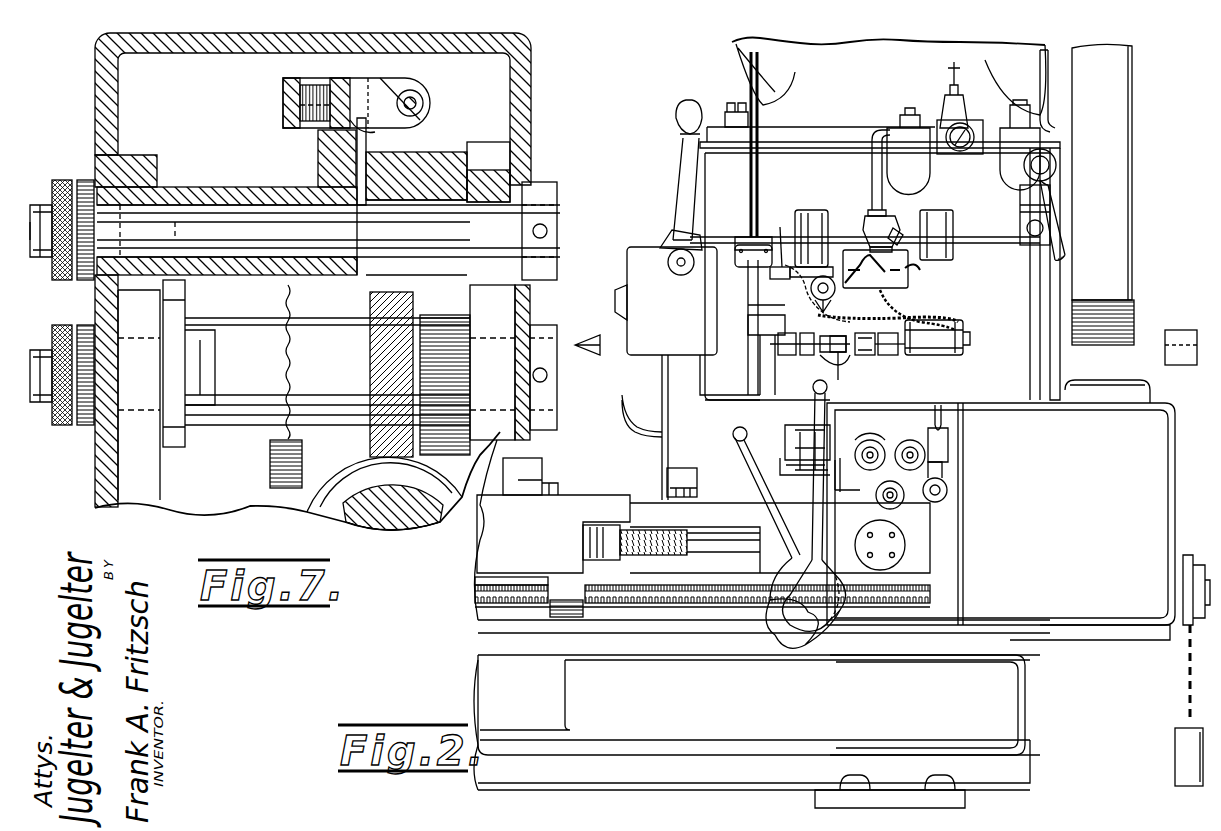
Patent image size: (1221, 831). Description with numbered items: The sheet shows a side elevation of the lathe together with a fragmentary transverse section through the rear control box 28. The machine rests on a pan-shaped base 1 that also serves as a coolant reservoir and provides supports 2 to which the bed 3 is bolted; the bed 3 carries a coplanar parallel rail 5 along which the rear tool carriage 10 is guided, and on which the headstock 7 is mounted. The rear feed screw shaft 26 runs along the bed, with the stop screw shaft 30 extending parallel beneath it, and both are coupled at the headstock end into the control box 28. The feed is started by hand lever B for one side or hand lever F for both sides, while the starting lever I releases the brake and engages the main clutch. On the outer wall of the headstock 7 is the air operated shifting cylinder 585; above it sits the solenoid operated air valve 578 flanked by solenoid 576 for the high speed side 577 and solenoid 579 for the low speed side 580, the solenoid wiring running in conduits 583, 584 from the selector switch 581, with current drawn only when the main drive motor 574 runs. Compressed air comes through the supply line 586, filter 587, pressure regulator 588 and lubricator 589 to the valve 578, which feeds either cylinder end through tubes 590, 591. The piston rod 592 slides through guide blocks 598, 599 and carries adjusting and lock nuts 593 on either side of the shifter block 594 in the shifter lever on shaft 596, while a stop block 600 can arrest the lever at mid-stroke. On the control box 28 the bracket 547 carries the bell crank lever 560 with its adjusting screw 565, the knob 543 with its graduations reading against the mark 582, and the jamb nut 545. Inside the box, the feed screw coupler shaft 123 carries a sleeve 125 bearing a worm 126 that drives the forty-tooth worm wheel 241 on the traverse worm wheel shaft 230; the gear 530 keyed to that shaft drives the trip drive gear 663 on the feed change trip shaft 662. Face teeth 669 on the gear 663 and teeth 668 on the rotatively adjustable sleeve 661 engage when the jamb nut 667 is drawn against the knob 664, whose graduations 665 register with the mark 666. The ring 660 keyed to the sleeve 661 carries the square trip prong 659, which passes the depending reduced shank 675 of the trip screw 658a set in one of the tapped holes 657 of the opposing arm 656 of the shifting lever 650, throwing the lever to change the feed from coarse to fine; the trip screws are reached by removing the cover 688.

In FIG. 7, the rear control box 28 is at (531, 132).
In FIG. 2, the rear control box 28 is at (1160, 452).
In FIG. 7, the splined portion of drive shaft / feed screw coupler shaft 123 is at (400, 528).
In FIG. 7, the sleeve 125 is at (355, 522).
In FIG. 7, the worm 126 is at (298, 512).
In FIG. 7, the jamb nut 667 is at (45, 203).
In FIG. 2, the jamb nut 667 is at (948, 468).
In FIG. 7, the knob 664 is at (62, 180).
In FIG. 2, the knob 664 is at (948, 445).
In FIG. 7, the circumferential graduations 665 is at (88, 180).
In FIG. 7, the rotatively adjustable sleeve 661 is at (195, 187).
In FIG. 7, the feed change trip shaft 662 is at (175, 213).
In FIG. 7, the ring 660 is at (318, 168).
In FIG. 7, the square trip prong 659 is at (318, 143).
In FIG. 7, the teeth on gear 669 is at (416, 176).
In FIG. 7, the teeth on sleeve 668 is at (372, 160).
In FIG. 7, the trip drive gear 663 is at (470, 168).
In FIG. 7, the shifting lever 650 is at (318, 78).
In FIG. 7, the opposing arm of shifter lever 656 is at (300, 90).
In FIG. 7, the tapped holes 657 is at (300, 120).
In FIG. 7, the trip screw 658a is at (405, 78).
In FIG. 7, the depending reduced shank of trip screw 675 is at (378, 125).
In FIG. 7, the worm wheel 241 is at (370, 440).
In FIG. 7, the gear 530 is at (475, 370).
In FIG. 7, the traverse worm wheel shaft 230 is at (557, 392).
In FIG. 2, the supply line 586 is at (1053, 96).
In FIG. 2, the headstock 7 is at (1040, 290).
In FIG. 2, the shaft 596 is at (790, 300).
In FIG. 2, the duplex double throw selector switch 581 is at (745, 290).
In FIG. 2, the starting lever I is at (680, 115).
In FIG. 2, the main drive motor 574 is at (740, 54).
In FIG. 2, the conduit 584 is at (745, 195).
In FIG. 2, the conduit 583 is at (861, 263).
In FIG. 2, the solenoid 579 is at (810, 210).
In FIG. 2, the low speed side of valve 580 is at (850, 250).
In FIG. 2, the high speed side of valve 577 is at (900, 245).
In FIG. 2, the solenoid 576 is at (948, 222).
In FIG. 2, the pressure regulator 588 is at (950, 102).
In FIG. 2, the lubricator 589 is at (920, 170).
In FIG. 2, the filter 587 is at (1025, 166).
In FIG. 2, the tube 590 is at (881, 268).
In FIG. 2, the solenoid operated air valve 578 is at (845, 294).
In FIG. 2, the tube 591 is at (950, 302).
In FIG. 2, the air cylinder 585 is at (940, 362).
In FIG. 2, the piston rod 592 is at (775, 350).
In FIG. 2, the guide block 598 is at (807, 356).
In FIG. 2, the shifter block 594 is at (838, 355).
In FIG. 2, the adjusting and lock nuts 593 is at (817, 374).
In FIG. 2, the stop block 600 is at (867, 362).
In FIG. 2, the guide block 599 is at (878, 355).
In FIG. 2, the cover 688 is at (1013, 393).
In FIG. 2, the adjusting screw 565 is at (860, 448).
In FIG. 2, the mark 582 is at (905, 440).
In FIG. 2, the washer and jamb nut 545 is at (860, 460).
In FIG. 2, the knob 543 is at (880, 490).
In FIG. 2, the mark 666 is at (935, 422).
In FIG. 2, the bell crank lever 560 is at (795, 470).
In FIG. 2, the hand lever B is at (735, 436).
In FIG. 2, the hand lever F is at (814, 505).
In FIG. 2, the bracket 547 is at (790, 425).
In FIG. 2, the rear tool carriage 10 is at (572, 508).
In FIG. 2, the rail 5 is at (710, 520).
In FIG. 2, the rear feed screw shaft 26 is at (715, 558).
In FIG. 2, the stop screw shaft 30 is at (632, 593).
In FIG. 2, the bed 3 is at (702, 628).
In FIG. 2, the support 2 is at (1005, 645).
In FIG. 2, the base 1 is at (1010, 685).